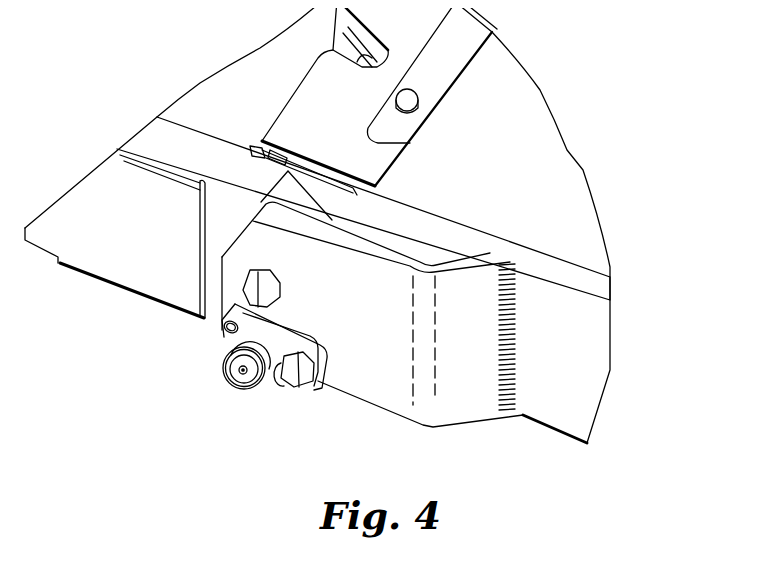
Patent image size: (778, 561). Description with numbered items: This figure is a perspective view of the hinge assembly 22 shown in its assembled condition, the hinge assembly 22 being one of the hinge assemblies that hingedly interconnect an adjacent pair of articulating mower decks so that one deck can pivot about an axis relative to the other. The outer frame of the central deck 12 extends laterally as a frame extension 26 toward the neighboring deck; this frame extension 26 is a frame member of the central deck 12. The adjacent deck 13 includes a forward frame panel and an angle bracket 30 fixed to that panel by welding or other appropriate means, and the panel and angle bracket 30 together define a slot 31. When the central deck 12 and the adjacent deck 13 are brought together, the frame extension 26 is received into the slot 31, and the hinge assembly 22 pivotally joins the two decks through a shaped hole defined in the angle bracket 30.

The central deck 12 is at (90, 277).
The deck 13 is at (533, 422).
The hinge assembly 22 is at (214, 387).
The frame extension 26 is at (212, 318).
The angle bracket 30 is at (338, 397).
The slot 31 is at (378, 230).